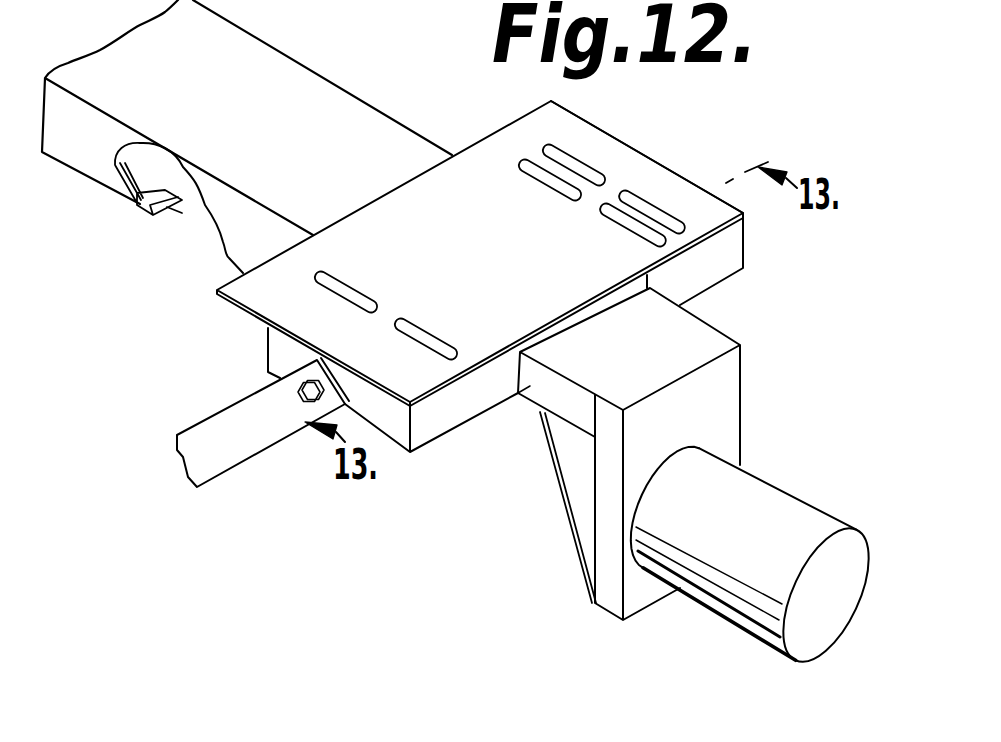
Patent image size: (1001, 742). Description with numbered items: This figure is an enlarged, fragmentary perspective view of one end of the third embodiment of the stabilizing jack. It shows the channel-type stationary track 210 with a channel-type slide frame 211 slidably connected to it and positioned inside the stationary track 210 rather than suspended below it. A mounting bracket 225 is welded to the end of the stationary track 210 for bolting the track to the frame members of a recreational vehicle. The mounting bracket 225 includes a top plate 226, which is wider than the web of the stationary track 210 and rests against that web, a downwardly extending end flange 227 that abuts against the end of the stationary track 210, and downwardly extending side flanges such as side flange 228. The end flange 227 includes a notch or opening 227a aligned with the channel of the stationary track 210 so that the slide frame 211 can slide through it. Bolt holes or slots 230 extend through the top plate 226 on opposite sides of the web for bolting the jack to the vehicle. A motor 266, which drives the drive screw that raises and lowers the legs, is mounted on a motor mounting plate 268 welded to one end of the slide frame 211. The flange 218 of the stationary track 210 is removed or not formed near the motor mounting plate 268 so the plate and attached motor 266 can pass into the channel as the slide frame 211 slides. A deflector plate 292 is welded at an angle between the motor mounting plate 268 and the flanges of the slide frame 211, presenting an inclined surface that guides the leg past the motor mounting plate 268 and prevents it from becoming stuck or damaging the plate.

The stationary track 210 is at (327, 78).
The slide frame 211 is at (214, 231).
The flange 218 is at (136, 203).
The mounting bracket 225 is at (663, 167).
The top plate 226 is at (606, 132).
The end flange 227 is at (745, 243).
The notch or opening 227a is at (531, 401).
The side flange 228 is at (393, 442).
The bolt holes or slots 230 is at (530, 172).
The motor 266 is at (812, 503).
The motor mounting plate 268 is at (596, 537).
The deflector plate 292 is at (555, 477).